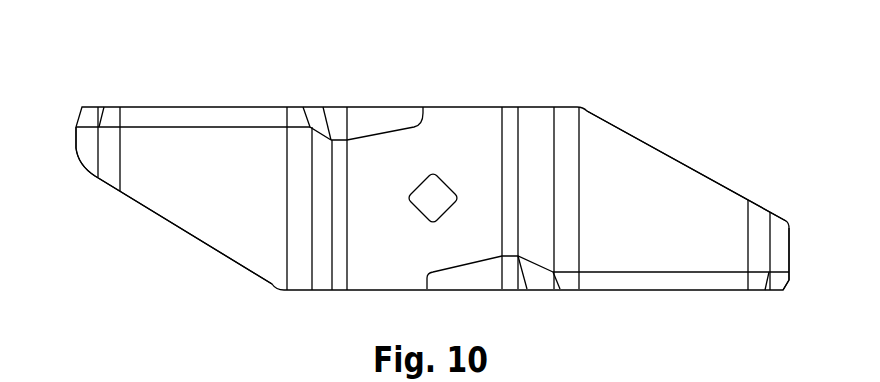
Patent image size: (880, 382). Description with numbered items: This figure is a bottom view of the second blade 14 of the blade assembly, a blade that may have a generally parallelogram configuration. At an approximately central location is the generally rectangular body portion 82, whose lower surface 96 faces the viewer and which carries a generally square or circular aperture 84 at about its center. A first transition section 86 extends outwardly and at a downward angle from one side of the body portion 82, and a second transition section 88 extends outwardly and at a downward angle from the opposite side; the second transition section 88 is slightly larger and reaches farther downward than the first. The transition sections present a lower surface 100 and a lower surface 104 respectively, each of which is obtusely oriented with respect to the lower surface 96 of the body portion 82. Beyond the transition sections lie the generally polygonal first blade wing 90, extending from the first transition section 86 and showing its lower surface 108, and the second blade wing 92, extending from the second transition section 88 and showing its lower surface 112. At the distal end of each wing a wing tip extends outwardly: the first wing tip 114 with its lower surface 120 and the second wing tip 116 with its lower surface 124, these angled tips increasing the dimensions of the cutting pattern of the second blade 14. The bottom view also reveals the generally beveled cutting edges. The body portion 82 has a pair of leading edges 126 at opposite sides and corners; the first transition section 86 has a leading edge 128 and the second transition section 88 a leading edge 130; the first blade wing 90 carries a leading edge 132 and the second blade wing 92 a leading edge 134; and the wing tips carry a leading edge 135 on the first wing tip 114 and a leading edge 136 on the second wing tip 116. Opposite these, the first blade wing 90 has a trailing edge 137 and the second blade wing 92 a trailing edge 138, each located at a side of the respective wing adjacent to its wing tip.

The second blade 14 is at (701, 89).
The body portion 82 is at (368, 227).
The aperture 84 is at (427, 198).
The first transition section 86 is at (540, 188).
The second transition section 88 is at (320, 213).
The first blade wing 90 is at (660, 215).
The second blade wing 92 is at (187, 163).
The lower surface 96 is at (455, 130).
The lower surface 100 is at (530, 130).
The lower surface 104 is at (323, 268).
The lower surface 108 is at (622, 172).
The lower surface 112 is at (180, 213).
The first wing tip 114 is at (780, 252).
The second wing tip 116 is at (92, 137).
The lower surface 120 is at (779, 230).
The lower surface 124 is at (85, 155).
The leading edge 126 is at (385, 120).
The leading edge 128 is at (538, 280).
The leading edge 130 is at (313, 122).
The leading edge 132 is at (628, 280).
The leading edge 134 is at (225, 118).
The leading edge 135 is at (773, 280).
The leading edge 136 is at (90, 117).
The trailing edge 137 is at (663, 148).
The trailing edge 138 is at (210, 250).